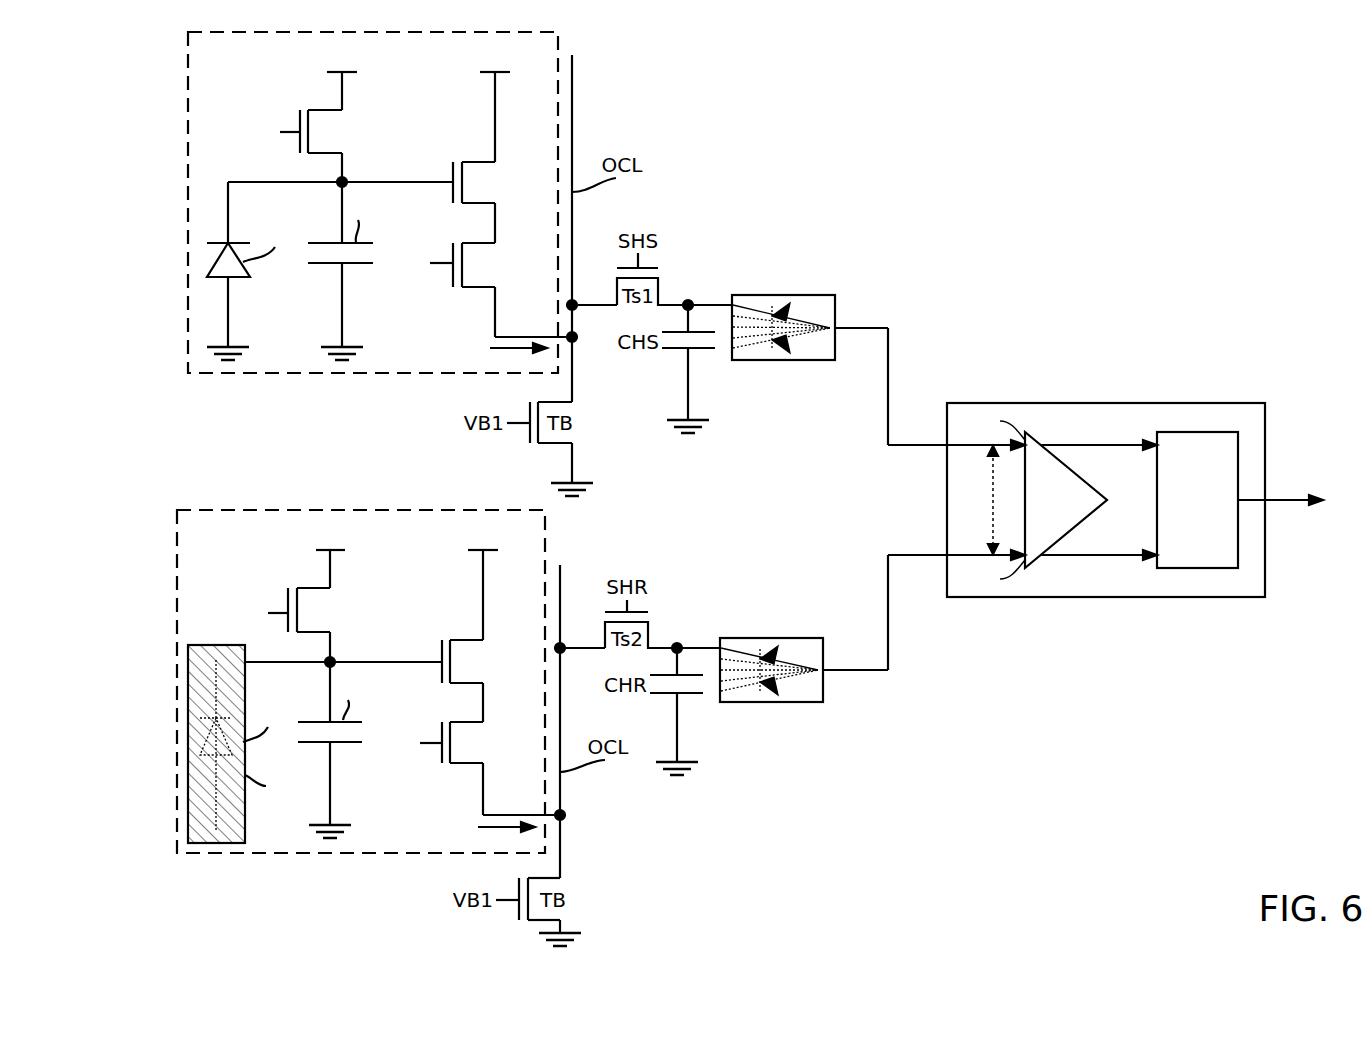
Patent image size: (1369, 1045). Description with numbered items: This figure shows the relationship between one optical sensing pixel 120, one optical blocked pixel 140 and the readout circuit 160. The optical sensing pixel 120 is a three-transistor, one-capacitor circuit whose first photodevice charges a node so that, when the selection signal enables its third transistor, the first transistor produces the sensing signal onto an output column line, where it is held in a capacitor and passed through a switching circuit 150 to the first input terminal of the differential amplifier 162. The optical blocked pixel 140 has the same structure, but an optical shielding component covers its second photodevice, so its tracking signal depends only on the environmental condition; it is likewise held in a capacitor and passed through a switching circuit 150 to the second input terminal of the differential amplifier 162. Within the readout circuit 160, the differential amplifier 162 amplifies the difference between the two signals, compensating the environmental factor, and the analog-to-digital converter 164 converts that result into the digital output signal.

The optical sensing pixel 120 is at (263, 374).
The optical blocked pixel 140 is at (302, 510).
The switching circuit 150 is at (810, 295).
The readout circuit 160 is at (1265, 425).
The differential amplifier 162 is at (1066, 500).
The analog-to-digital converter 164 is at (1197, 500).